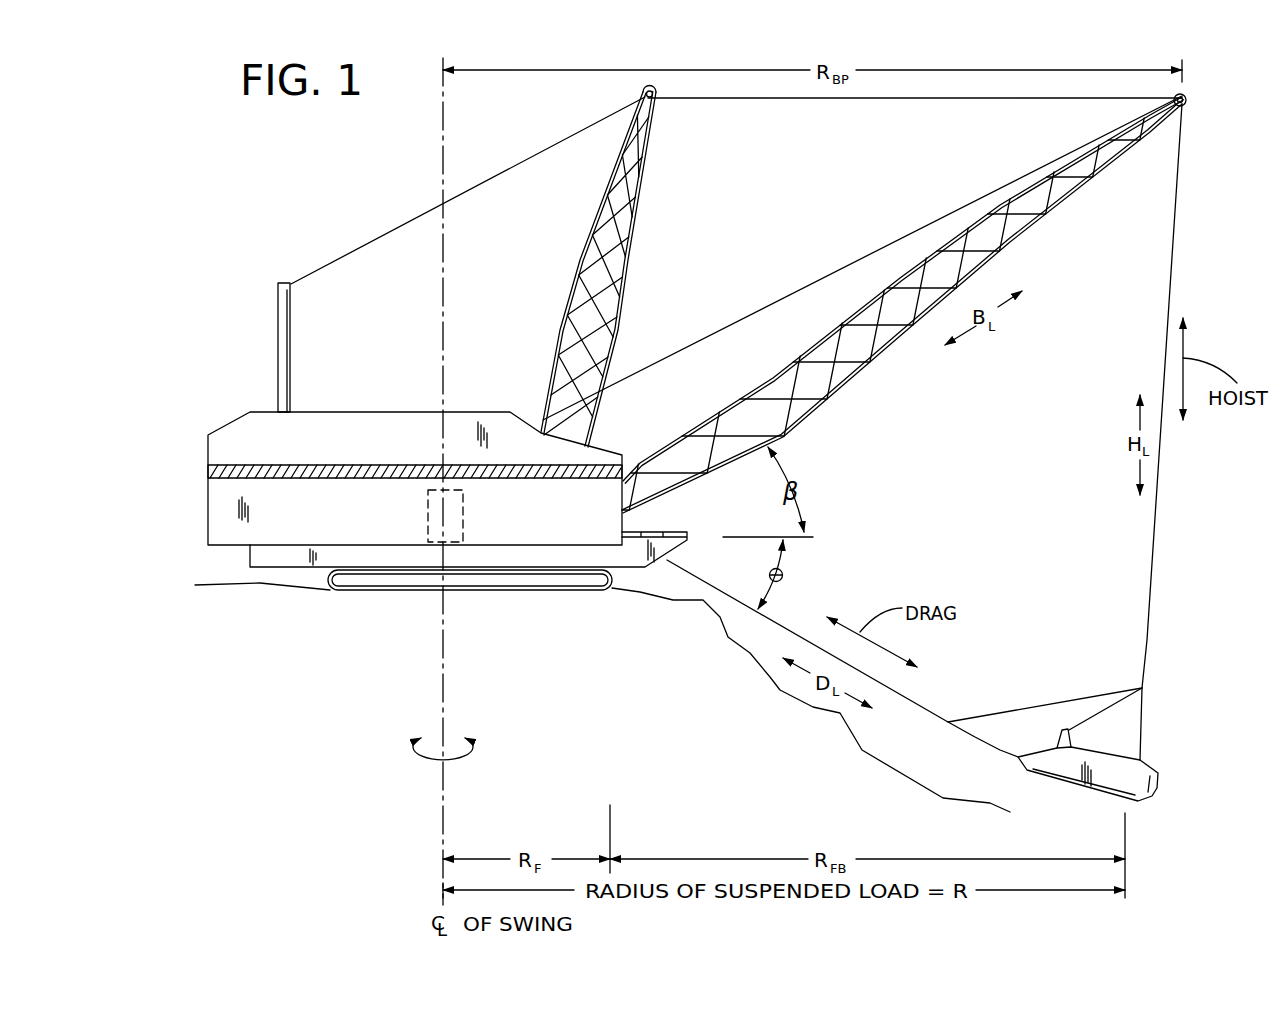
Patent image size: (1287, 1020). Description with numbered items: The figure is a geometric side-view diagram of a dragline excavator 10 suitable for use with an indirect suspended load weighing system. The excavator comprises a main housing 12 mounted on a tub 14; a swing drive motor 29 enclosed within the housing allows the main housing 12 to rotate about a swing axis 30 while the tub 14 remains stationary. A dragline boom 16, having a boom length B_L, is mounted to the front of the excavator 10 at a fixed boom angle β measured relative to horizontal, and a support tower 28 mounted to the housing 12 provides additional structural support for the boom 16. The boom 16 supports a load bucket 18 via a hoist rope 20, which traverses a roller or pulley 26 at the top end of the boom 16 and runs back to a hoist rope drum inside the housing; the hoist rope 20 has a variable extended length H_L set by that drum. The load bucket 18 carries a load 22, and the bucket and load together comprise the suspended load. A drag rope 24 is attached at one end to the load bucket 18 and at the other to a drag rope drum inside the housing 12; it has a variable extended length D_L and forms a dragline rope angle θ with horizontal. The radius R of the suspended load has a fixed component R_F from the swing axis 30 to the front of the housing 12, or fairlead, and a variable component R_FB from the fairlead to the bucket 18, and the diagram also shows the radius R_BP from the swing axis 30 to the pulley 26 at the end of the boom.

The dragline excavator 10 is at (333, 187).
The main housing 12 is at (418, 412).
The tub 14 is at (398, 590).
The dragline boom 16 is at (838, 396).
The load bucket 18 is at (1158, 787).
The hoist rope 20 is at (1152, 602).
The load 22 is at (1142, 775).
The drag rope 24 is at (908, 697).
The roller or pulley 26 is at (1187, 95).
The support tower 28 is at (638, 203).
The swing drive motor 29 is at (463, 530).
The swing axis 30 is at (443, 655).